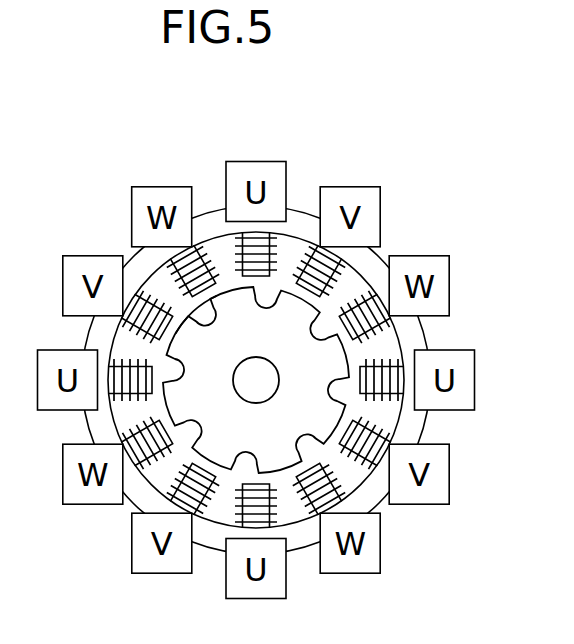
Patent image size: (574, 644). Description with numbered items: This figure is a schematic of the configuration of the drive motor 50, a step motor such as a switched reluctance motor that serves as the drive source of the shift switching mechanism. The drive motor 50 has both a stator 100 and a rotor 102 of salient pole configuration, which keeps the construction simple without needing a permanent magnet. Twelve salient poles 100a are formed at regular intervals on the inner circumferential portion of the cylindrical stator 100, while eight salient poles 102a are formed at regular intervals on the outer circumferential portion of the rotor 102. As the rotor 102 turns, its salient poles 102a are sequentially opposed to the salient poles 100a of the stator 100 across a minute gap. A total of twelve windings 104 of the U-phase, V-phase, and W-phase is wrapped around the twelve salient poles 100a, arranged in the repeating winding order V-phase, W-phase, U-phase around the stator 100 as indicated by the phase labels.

The drive motor 50 is at (251, 146).
The stator 100 is at (208, 222).
The salient poles of the stator 100a is at (288, 272).
The windings 104 is at (288, 272).
The rotor 102 is at (293, 375).
The salient poles of the rotor 102a is at (174, 295).